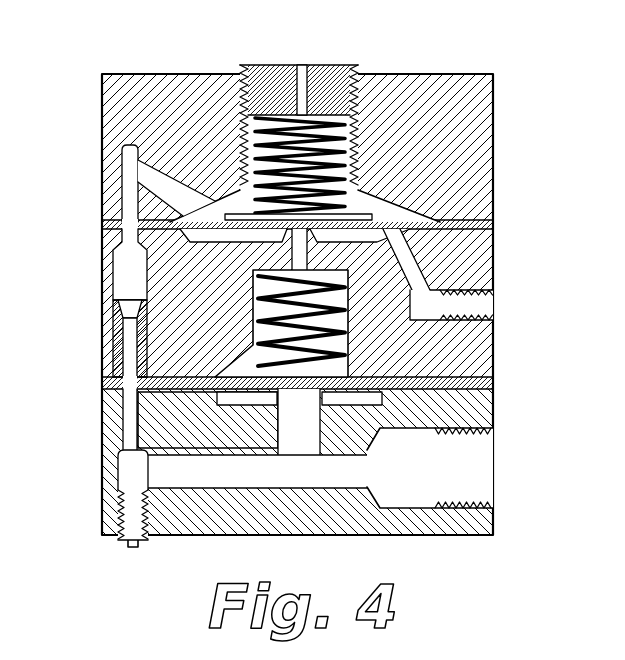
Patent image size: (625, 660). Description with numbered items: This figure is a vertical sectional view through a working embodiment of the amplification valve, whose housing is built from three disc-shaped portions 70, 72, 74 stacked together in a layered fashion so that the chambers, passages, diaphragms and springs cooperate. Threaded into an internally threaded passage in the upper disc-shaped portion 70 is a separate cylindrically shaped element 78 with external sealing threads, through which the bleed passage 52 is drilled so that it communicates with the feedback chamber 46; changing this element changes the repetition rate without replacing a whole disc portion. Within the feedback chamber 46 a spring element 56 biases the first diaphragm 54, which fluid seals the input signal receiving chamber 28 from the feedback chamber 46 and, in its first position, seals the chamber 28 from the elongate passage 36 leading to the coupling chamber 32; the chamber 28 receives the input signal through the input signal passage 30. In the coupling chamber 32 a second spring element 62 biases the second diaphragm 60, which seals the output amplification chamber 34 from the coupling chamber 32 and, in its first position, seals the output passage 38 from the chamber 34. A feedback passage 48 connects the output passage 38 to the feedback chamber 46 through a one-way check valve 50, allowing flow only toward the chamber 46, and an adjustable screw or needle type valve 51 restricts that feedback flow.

The input signal receiving chamber 28 is at (225, 244).
The input signal passage 30 is at (440, 332).
The coupling chamber 32 is at (257, 306).
The output amplification chamber 34 is at (222, 402).
The elongate passage 36 is at (290, 266).
The output passage 38 is at (408, 497).
The feedback chamber 46 is at (396, 218).
The feedback passage 48 is at (258, 478).
The one-way check valve 50 is at (112, 318).
The adjustable screw or needle type valve 51 is at (120, 540).
The bleed passage 52 is at (299, 65).
The first movable pressure responsive closure member 54 is at (100, 224).
The spring element 56 is at (350, 178).
The second pressure responsive movable closure member 60 is at (102, 388).
The spring element 62 is at (352, 312).
The disc-shaped portion 70 is at (468, 112).
The disc-shaped portion 72 is at (495, 265).
The disc-shaped portion 74 is at (495, 406).
The cylindrically shaped element 78 is at (346, 75).